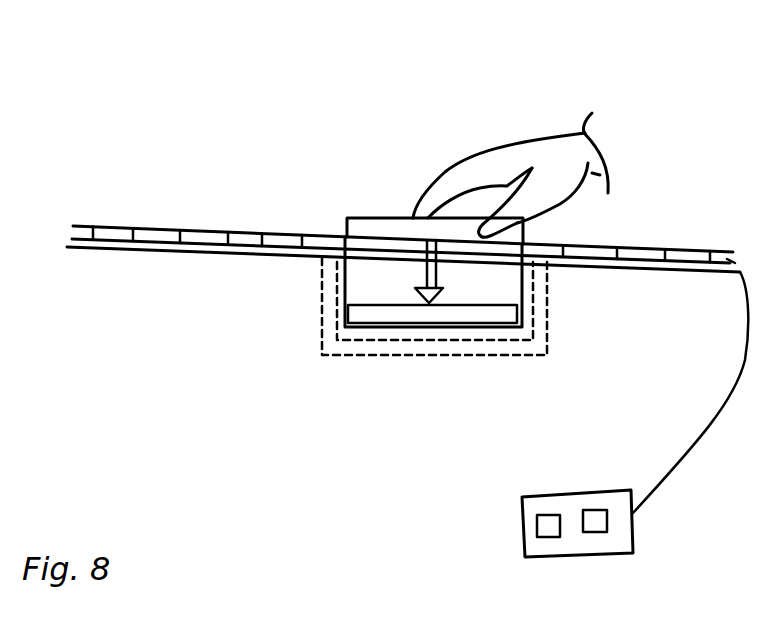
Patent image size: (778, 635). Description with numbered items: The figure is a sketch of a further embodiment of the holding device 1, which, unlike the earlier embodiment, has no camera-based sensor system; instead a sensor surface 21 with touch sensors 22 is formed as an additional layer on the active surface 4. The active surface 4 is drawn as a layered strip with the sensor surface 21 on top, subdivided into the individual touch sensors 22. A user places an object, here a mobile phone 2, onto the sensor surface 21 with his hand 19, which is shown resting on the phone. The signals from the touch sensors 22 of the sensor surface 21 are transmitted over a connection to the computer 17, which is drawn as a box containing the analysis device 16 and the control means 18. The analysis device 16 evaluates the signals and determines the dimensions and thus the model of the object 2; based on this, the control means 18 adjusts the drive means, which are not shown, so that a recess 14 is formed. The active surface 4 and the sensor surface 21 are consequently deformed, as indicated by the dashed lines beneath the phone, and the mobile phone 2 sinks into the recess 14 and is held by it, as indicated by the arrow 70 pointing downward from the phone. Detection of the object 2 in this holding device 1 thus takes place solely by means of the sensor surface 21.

The holding device 1 is at (372, 131).
The mobile phone 2 is at (380, 223).
The active surface 4 is at (198, 250).
The recess 14 is at (355, 278).
The analysis device 16 is at (547, 542).
The computer 17 is at (577, 487).
The control means 18 is at (597, 538).
The hand 19 is at (517, 147).
The sensor surface 21 is at (200, 230).
The touch sensors 22 is at (115, 232).
The arrow 70 is at (437, 275).